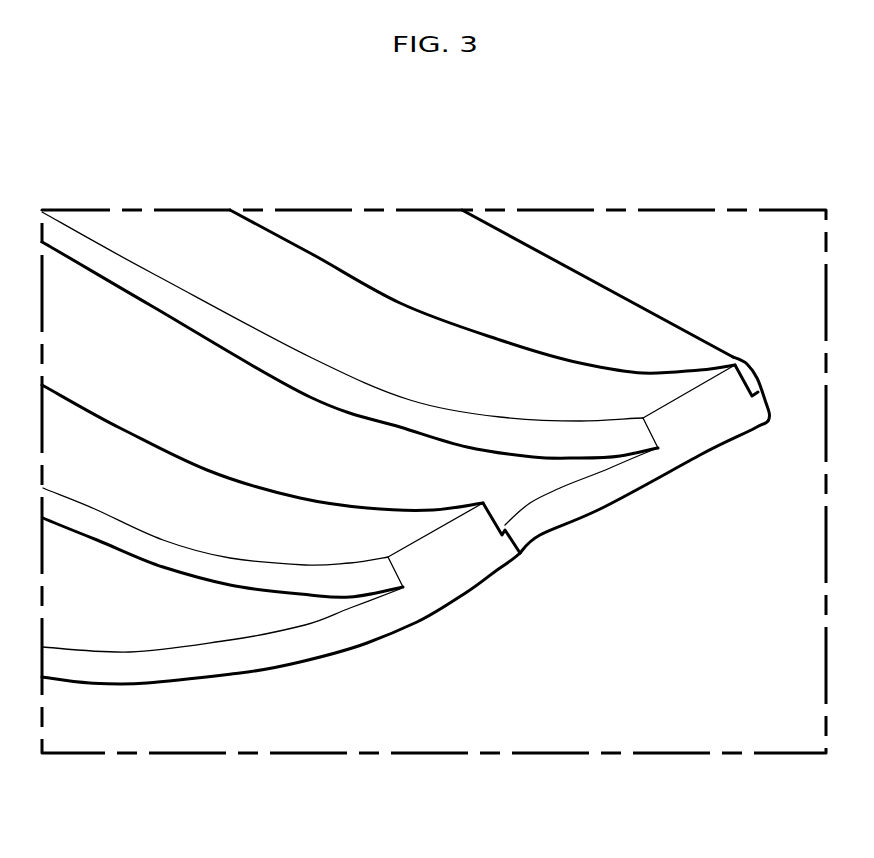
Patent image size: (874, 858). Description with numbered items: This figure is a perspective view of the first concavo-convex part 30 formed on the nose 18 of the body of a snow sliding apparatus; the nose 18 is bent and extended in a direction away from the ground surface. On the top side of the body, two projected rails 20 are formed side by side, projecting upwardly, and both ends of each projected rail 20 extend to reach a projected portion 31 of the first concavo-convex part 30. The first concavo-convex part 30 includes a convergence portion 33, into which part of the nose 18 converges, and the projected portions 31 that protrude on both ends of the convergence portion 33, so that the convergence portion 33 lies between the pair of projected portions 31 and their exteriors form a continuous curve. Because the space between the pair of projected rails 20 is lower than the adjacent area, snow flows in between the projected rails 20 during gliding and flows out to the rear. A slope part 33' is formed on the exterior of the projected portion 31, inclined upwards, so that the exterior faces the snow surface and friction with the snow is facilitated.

The nose 18 is at (108, 670).
The projected rail 20 is at (292, 272).
The first concavo-convex part 30 is at (735, 560).
The projected portion 31 is at (708, 430).
The convergence portion 33 is at (644, 523).
The slope part 33' is at (581, 335).